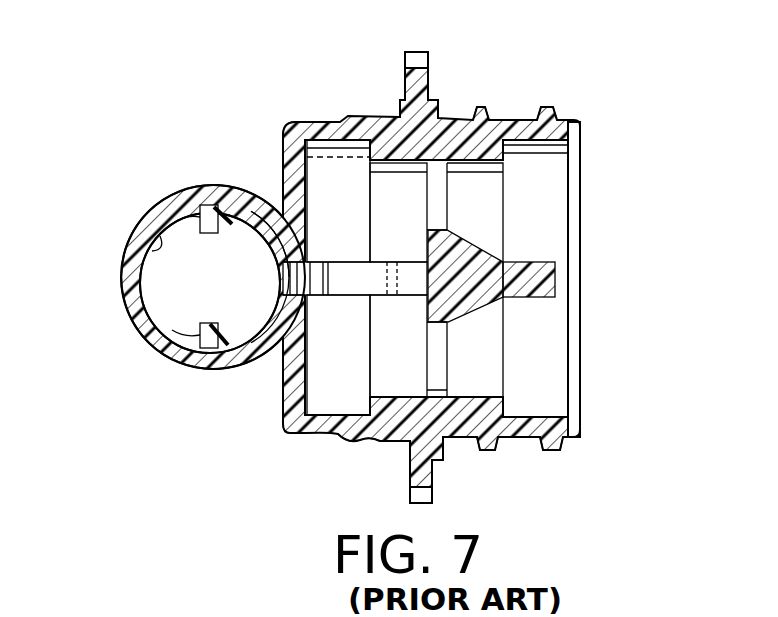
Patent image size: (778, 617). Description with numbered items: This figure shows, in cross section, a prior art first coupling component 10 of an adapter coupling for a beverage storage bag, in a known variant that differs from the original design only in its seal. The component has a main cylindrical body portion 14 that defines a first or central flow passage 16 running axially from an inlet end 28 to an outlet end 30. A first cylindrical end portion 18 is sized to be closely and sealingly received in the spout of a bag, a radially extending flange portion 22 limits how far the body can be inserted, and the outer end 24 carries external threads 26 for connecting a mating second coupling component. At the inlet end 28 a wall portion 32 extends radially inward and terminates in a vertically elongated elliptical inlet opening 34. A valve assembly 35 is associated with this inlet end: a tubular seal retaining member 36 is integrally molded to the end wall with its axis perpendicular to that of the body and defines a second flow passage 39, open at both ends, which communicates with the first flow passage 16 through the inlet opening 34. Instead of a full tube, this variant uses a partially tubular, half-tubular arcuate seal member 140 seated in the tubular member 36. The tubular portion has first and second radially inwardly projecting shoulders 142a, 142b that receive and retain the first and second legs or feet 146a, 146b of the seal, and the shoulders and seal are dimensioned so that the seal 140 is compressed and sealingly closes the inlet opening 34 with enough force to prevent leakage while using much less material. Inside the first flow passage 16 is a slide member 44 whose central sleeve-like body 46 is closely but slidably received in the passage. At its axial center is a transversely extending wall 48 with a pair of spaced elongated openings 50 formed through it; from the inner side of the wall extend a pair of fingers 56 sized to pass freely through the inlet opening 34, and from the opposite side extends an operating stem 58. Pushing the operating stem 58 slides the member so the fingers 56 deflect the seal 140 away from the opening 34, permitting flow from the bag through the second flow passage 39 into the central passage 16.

The first coupling component 10 is at (360, 98).
The flange portion 22 is at (430, 58).
The outer end 24 is at (503, 120).
The external threads 26 is at (479, 452).
The wall portion 32 is at (282, 148).
The inlet end 28 is at (268, 383).
The first cylindrical end portion 18 is at (306, 436).
The main cylindrical body portion 14 is at (377, 450).
The first flow passage 16 is at (533, 318).
The outlet end 30 is at (602, 215).
The slide member 44 is at (537, 178).
The fingers 56 is at (352, 277).
The inlet opening 34 is at (300, 298).
The elongated openings 50 is at (437, 207).
The transversely extending wall 48 is at (443, 230).
The operating stem 58 is at (558, 272).
The sleeve-like body 46 is at (478, 395).
The tubular seal retaining member 36 is at (172, 200).
The valve assembly 35 is at (142, 350).
The second flow passage 39 is at (153, 251).
The arcuate seal member 140 is at (275, 290).
The first leg 146a is at (202, 214).
The second leg 146b is at (207, 351).
The first radially inwardly projecting shoulder 142a is at (203, 222).
The second radially inwardly projecting shoulder 142b is at (203, 332).